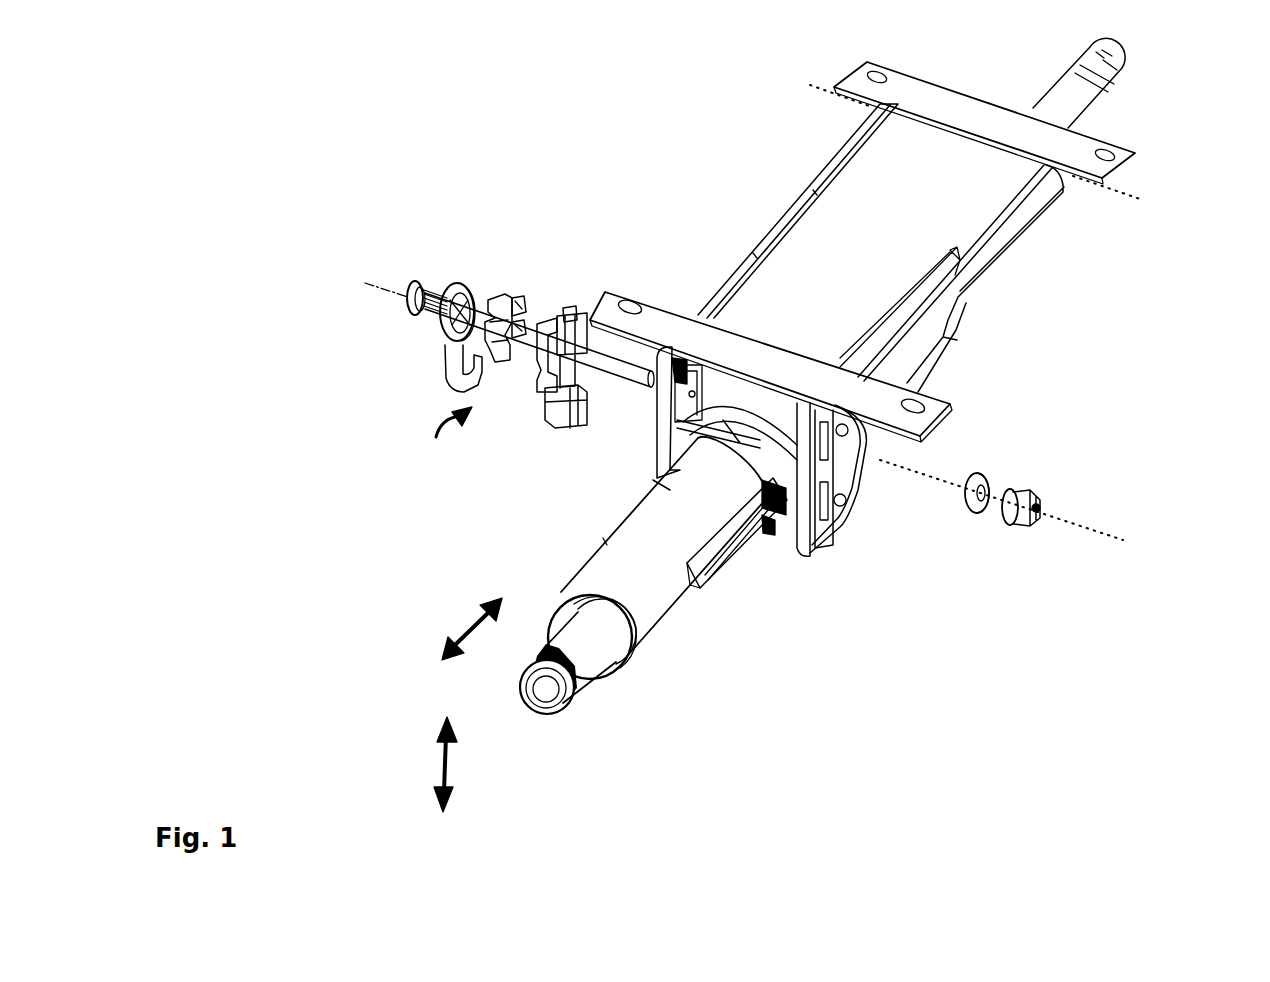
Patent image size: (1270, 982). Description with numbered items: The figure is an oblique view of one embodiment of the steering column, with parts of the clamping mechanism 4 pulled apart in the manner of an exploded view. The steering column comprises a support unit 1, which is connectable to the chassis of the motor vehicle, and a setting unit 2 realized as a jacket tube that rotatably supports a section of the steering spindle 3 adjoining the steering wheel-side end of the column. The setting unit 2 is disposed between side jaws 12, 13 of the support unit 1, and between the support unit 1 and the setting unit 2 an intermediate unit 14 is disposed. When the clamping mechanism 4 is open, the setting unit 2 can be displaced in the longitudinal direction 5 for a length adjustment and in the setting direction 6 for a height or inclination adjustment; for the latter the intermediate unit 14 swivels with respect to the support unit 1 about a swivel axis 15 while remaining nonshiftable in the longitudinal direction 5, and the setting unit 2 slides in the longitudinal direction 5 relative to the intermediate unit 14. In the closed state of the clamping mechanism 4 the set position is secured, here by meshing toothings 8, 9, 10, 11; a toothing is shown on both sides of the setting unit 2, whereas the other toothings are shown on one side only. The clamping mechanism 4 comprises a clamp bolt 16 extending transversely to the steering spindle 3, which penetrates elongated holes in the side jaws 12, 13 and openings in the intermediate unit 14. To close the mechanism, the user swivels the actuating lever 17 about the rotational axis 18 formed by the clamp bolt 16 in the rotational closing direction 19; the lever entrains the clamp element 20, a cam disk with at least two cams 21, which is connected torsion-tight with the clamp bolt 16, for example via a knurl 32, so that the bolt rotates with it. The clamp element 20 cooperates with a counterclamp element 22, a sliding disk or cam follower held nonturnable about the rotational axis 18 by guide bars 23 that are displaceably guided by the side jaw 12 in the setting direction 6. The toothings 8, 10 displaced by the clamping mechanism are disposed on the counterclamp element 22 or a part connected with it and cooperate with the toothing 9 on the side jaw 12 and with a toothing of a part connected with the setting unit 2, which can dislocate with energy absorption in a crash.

The support unit 1 is at (925, 332).
The setting unit 2 is at (648, 608).
The steering spindle 3 is at (588, 660).
The clamping mechanism 4 is at (503, 413).
The longitudinal direction 5 is at (467, 624).
The setting direction 6 is at (440, 764).
The toothing 8 is at (541, 388).
The toothing 9 is at (672, 382).
The toothing 10 is at (565, 424).
The toothing 11 is at (658, 474).
The side jaw 12 is at (655, 428).
The side jaw 13 is at (811, 560).
The intermediate unit 14 is at (760, 542).
The swivel axis 15 is at (1147, 202).
The clamp bolt 16 is at (417, 283).
The actuating lever 17 is at (455, 284).
The rotational axis 18 is at (1088, 528).
The rotational closing direction 19 is at (437, 440).
The clamp element 20 is at (493, 292).
The cam 21 is at (519, 302).
The counterclamp element 22 is at (572, 300).
The guide bars 23 is at (590, 327).
The knurl 32 is at (407, 307).